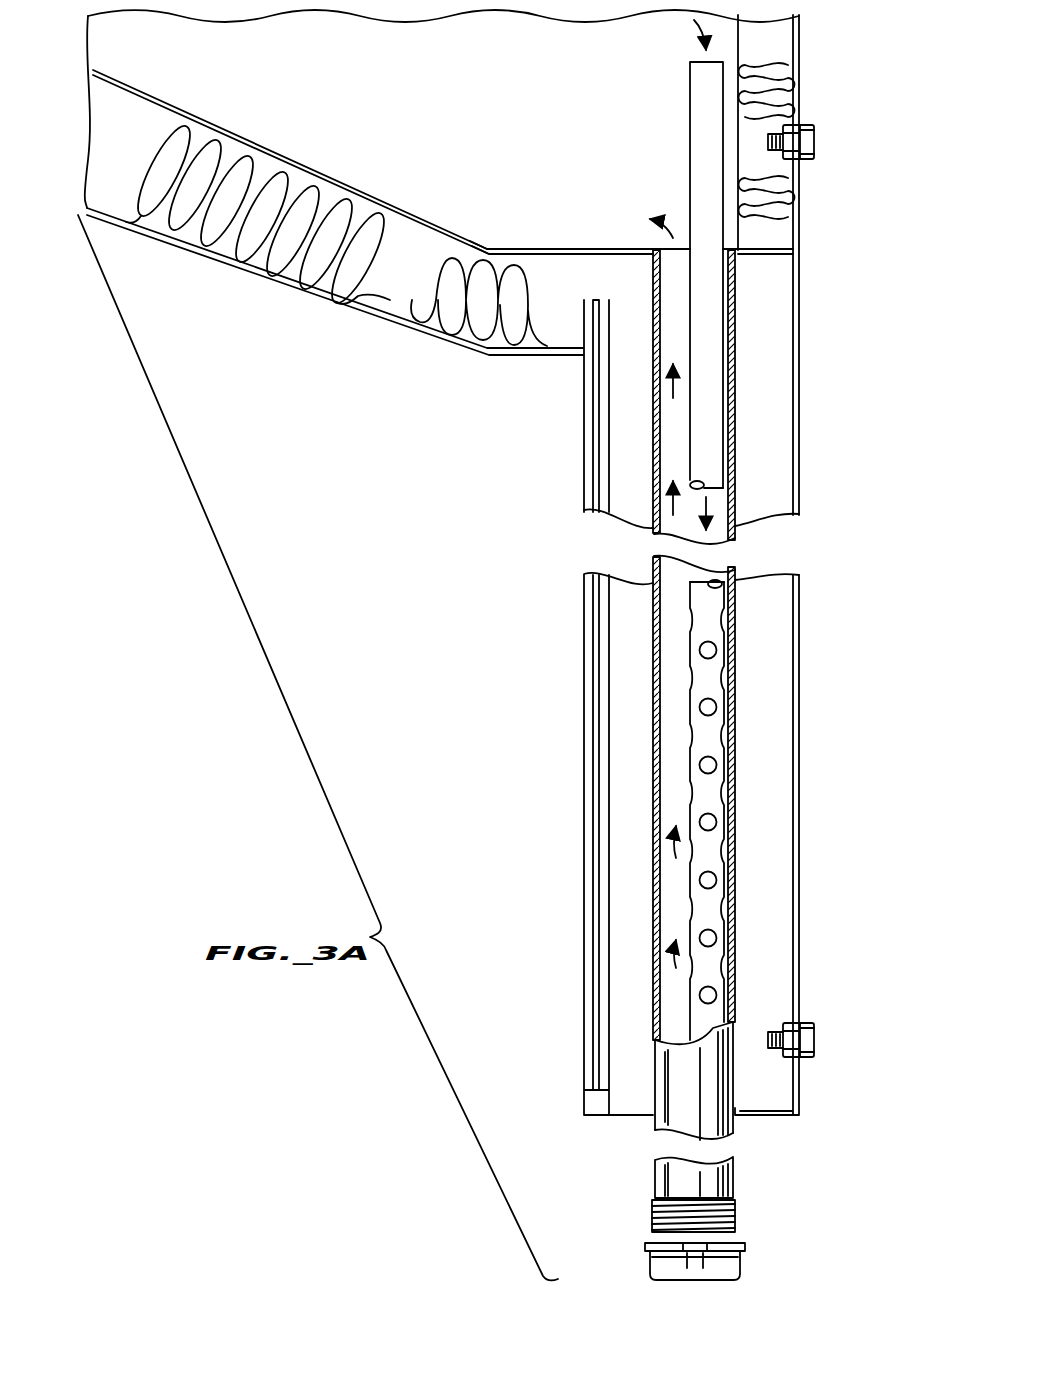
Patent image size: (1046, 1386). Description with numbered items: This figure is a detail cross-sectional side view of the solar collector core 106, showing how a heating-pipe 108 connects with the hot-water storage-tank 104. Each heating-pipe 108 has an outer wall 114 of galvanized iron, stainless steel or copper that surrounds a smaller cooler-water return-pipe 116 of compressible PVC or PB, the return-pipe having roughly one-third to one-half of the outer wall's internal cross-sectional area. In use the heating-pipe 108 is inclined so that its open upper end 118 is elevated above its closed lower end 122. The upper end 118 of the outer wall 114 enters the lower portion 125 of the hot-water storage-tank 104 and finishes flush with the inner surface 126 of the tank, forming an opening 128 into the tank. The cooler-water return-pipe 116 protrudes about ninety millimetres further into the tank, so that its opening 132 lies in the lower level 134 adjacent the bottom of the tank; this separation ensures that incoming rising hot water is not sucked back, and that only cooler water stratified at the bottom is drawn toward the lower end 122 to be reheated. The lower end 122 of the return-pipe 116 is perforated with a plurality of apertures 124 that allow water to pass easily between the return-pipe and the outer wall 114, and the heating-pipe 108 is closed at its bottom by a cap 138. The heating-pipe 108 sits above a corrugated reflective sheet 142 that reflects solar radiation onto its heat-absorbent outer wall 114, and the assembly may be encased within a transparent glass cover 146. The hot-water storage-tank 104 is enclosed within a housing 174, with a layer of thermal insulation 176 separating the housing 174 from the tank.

The hot-water storage-tank 104 is at (277, 152).
The collector core 106 is at (652, 645).
The heating-pipe 108 is at (568, 820).
The outer wall 114 is at (653, 953).
The cooler-water return-pipe 116 is at (715, 440).
The upper end 118 is at (650, 363).
The lower end 122 is at (653, 1048).
The apertures 124 is at (713, 822).
The lower portion 125 is at (605, 232).
The opening 128 is at (667, 249).
The inner surface 126 is at (508, 249).
The opening 132 is at (703, 62).
The lower level 134 is at (680, 204).
The cap 138 is at (648, 1265).
The reflective sheet 142 is at (793, 680).
The transparent glass cover 146 is at (593, 432).
The housing 174 is at (263, 270).
The thermal insulation 176 is at (313, 268).